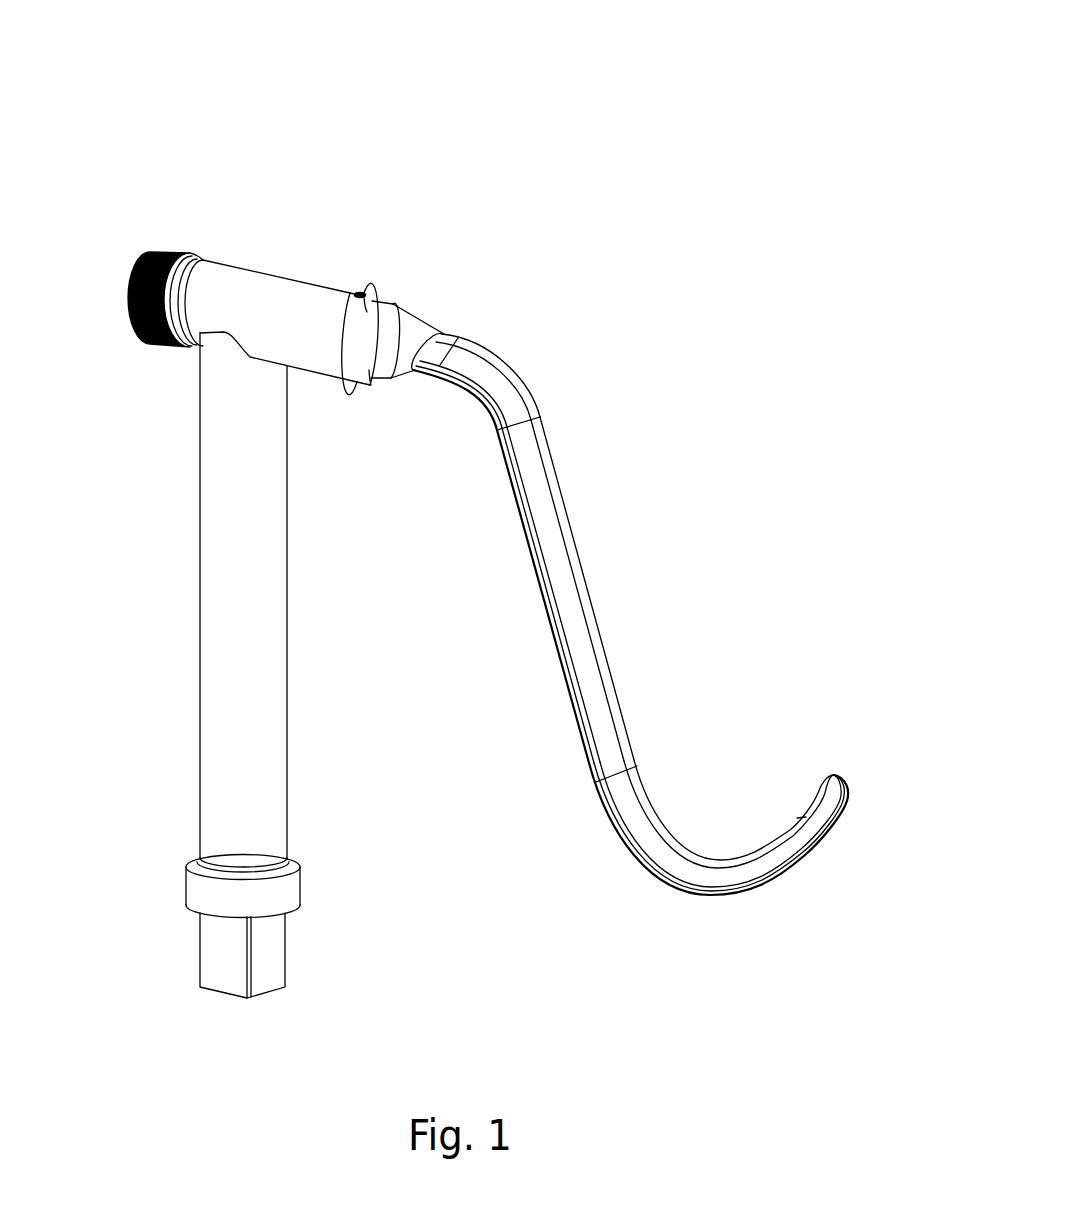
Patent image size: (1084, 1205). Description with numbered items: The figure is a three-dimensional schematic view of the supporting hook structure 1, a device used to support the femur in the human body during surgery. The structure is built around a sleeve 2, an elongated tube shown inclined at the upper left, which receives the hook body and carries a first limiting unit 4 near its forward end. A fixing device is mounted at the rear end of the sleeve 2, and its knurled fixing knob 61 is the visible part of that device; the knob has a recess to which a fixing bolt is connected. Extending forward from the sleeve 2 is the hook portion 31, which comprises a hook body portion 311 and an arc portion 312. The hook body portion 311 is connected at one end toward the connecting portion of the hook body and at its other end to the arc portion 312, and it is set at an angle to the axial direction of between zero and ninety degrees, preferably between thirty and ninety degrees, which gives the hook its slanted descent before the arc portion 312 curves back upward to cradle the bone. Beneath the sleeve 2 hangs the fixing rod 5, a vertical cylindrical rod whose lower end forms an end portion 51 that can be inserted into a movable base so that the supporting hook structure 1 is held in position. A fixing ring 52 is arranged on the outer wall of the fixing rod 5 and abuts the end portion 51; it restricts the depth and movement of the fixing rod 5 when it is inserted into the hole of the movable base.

The supporting hook structure 1 is at (670, 93).
The sleeve 2 is at (267, 290).
The first limiting unit 4 is at (362, 293).
The fixing rod 5 is at (225, 543).
The hook portion 31 is at (717, 360).
The hook body portion 311 is at (540, 493).
The arc portion 312 is at (625, 790).
The end portion 51 is at (220, 942).
The fixing ring 52 is at (197, 888).
The fixing knob 61 is at (147, 253).